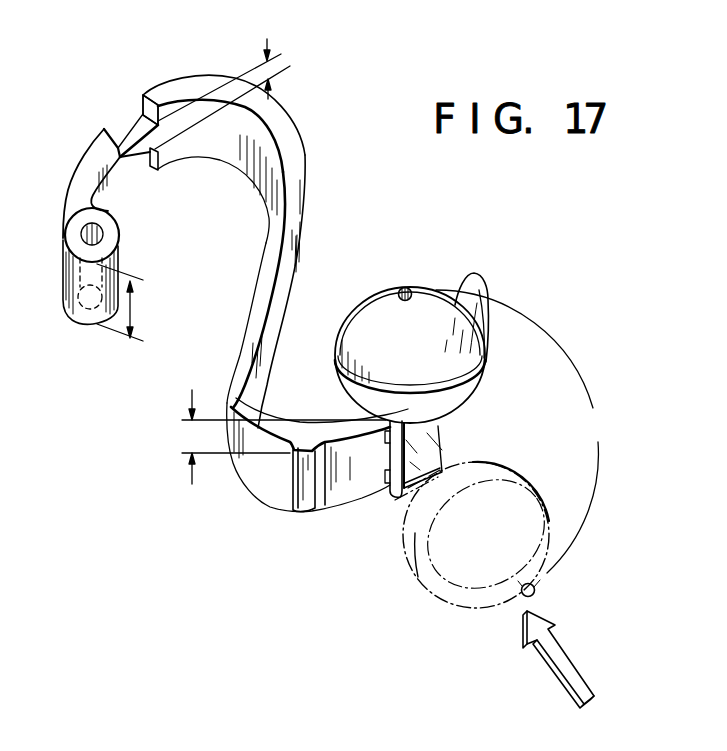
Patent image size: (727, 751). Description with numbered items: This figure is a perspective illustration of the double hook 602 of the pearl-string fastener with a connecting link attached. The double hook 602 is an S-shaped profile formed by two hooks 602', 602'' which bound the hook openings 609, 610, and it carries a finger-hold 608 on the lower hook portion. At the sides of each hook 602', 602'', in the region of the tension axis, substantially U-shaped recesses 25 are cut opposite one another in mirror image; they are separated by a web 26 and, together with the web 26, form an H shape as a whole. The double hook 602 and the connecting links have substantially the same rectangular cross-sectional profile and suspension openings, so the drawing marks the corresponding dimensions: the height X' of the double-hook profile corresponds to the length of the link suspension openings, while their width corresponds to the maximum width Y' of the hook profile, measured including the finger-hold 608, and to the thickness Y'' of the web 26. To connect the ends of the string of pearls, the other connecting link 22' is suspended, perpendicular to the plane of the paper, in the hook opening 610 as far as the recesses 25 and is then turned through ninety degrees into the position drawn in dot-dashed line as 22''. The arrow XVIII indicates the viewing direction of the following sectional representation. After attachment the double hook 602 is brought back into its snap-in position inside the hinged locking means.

The double hook 602 is at (310, 269).
The hook 602' is at (224, 95).
The hook 602'' is at (512, 301).
The U-shaped recesses 25 is at (147, 105).
The web 26 is at (126, 134).
The hook opening 609 is at (227, 154).
The finger-hold 608 is at (304, 478).
The hook opening 610 is at (313, 420).
The connecting link 22' is at (423, 392).
The connecting link turned through 90 degrees 22'' is at (454, 533).
The height of the double-hook profile X' is at (135, 302).
The maximum width of the hook profile Y' is at (284, 437).
The thickness of the web Y'' is at (230, 94).
The section view arrow XVIII is at (656, 633).